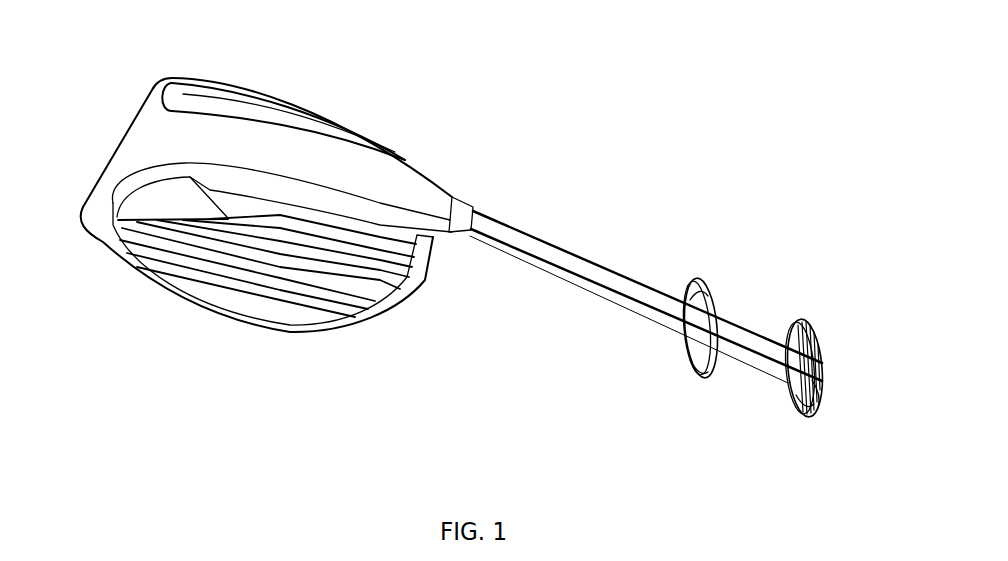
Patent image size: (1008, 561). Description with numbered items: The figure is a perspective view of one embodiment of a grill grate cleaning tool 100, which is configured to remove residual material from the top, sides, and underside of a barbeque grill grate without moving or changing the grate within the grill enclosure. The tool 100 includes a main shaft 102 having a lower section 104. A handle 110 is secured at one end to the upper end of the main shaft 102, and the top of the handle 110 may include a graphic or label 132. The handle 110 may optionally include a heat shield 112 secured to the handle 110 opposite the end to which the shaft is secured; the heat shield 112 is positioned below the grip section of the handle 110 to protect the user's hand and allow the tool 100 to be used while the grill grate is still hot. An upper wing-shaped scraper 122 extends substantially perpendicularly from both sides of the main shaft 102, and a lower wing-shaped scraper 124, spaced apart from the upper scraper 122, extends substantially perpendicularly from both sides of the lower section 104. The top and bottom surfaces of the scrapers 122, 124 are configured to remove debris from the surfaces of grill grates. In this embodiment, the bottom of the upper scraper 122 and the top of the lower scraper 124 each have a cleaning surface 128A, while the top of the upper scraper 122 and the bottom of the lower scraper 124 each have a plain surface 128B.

The grill grate cleaning tool 100 is at (467, 285).
The main shaft 102 is at (530, 243).
The lower section 104 is at (762, 358).
The handle 110 is at (395, 175).
The heat shield 112 is at (195, 272).
The upper wing-shaped scraper 122 is at (697, 278).
The lower wing-shaped scraper 124 is at (797, 320).
The cleaning surface 128A is at (703, 380).
The plain surface 128B is at (700, 340).
The graphic or label 132 is at (245, 133).